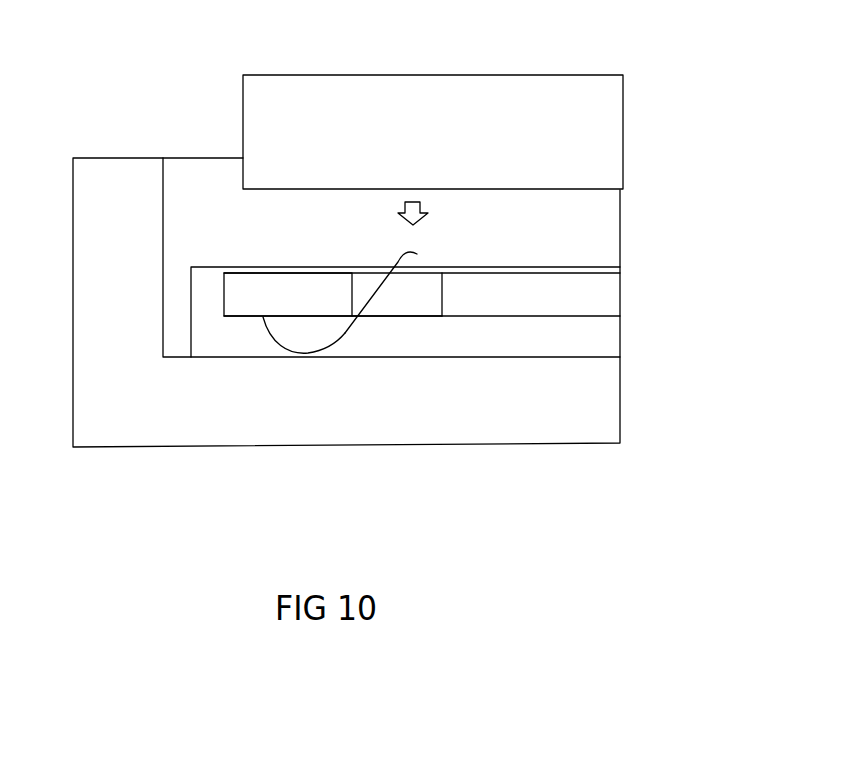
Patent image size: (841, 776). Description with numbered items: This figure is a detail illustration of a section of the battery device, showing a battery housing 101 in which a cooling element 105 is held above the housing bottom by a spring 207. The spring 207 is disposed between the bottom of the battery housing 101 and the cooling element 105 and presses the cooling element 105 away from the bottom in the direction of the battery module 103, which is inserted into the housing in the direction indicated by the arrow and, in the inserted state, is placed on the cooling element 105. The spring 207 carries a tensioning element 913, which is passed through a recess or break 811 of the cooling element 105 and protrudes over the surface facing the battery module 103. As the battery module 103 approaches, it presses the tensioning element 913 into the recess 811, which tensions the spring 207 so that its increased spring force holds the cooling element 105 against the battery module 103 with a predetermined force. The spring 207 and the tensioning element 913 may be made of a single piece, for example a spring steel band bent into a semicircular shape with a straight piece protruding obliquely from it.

The battery housing 101 is at (620, 405).
The battery module 103 is at (532, 75).
The cooling element 105 is at (620, 292).
The spring element 207 is at (273, 337).
The recess or break 811 is at (388, 313).
The tensioning element 913 is at (407, 267).